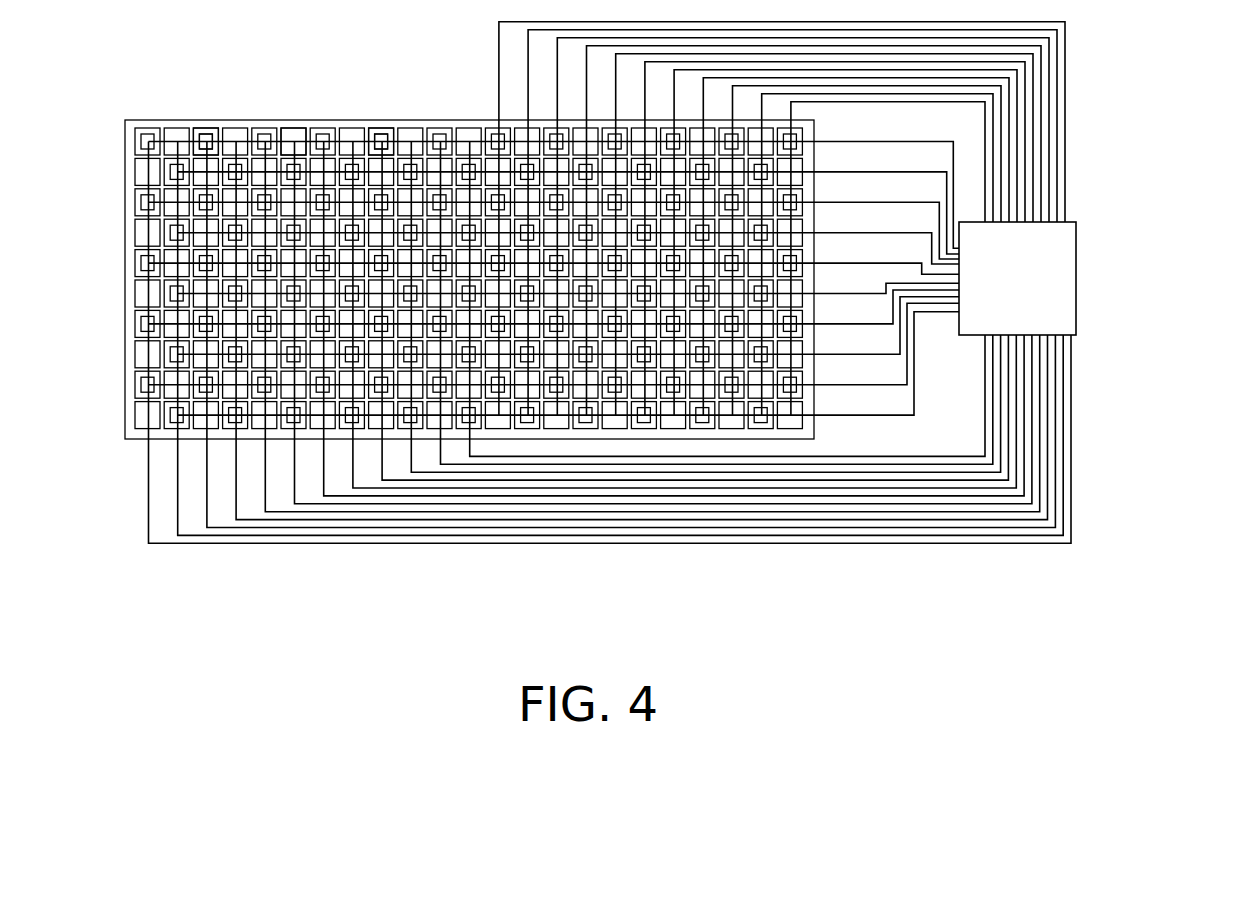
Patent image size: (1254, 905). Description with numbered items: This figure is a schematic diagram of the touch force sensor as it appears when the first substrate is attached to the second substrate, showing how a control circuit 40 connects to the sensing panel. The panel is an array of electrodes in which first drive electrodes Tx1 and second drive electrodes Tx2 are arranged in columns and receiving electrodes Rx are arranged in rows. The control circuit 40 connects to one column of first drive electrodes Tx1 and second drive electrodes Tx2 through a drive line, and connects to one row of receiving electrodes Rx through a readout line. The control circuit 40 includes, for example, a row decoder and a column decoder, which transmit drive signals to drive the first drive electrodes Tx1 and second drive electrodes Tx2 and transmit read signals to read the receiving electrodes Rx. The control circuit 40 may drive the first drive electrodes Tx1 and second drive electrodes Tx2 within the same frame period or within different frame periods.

The control circuit 40 is at (1077, 283).
The first drive electrodes Tx1 is at (210, 128).
The second drive electrodes Tx2 is at (295, 128).
The receiving electrodes Rx is at (385, 128).